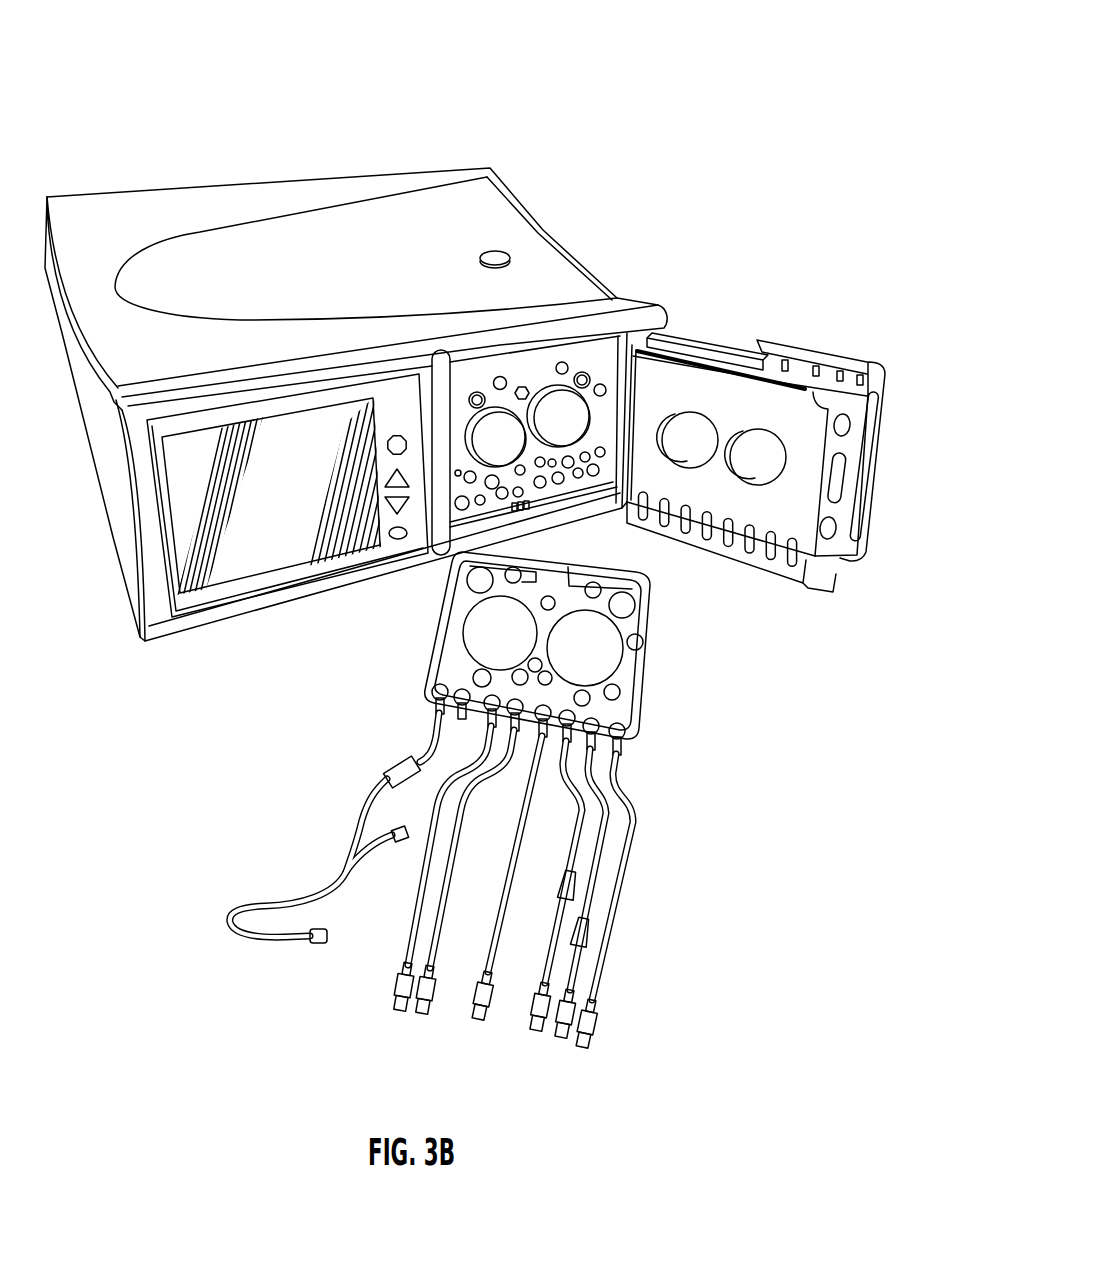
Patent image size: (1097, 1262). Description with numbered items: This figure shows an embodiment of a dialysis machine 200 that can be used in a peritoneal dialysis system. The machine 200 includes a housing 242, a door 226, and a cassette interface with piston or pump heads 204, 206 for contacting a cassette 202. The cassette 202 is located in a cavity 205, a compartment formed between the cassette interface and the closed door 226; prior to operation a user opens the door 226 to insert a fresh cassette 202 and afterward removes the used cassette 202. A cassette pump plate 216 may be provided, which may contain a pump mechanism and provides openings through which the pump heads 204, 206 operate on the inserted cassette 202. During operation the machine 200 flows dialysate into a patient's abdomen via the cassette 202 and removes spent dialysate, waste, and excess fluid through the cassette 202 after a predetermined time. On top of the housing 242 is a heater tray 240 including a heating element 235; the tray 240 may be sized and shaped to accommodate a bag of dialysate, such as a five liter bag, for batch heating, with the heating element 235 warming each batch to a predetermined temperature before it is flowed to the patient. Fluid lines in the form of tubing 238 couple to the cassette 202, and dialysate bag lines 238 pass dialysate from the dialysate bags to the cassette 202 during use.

The dialysis machine 200 is at (716, 72).
The cassette 202 is at (645, 700).
The pump head 204 is at (505, 430).
The cavity 205 is at (613, 490).
The pump head 206 is at (575, 413).
The cassette pump plate 216 is at (517, 370).
The door 226 is at (878, 473).
The heating element 235 is at (497, 251).
The tubing 238 is at (507, 1049).
The heater tray 240 is at (387, 262).
The housing 242 is at (149, 177).